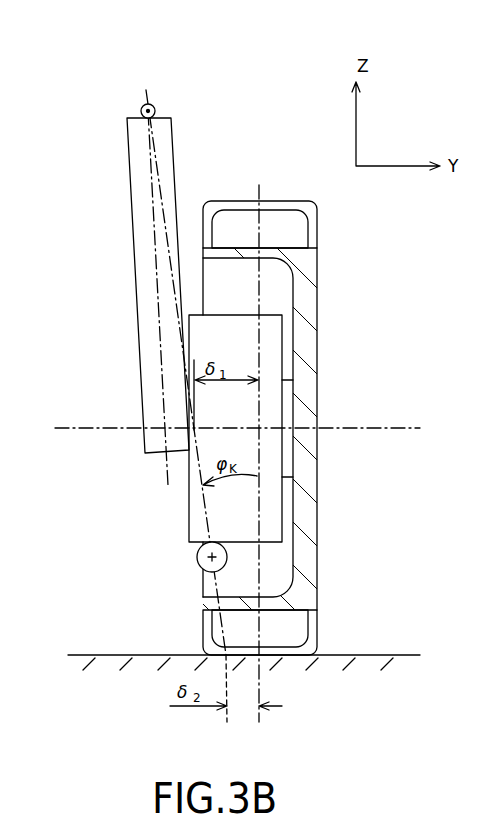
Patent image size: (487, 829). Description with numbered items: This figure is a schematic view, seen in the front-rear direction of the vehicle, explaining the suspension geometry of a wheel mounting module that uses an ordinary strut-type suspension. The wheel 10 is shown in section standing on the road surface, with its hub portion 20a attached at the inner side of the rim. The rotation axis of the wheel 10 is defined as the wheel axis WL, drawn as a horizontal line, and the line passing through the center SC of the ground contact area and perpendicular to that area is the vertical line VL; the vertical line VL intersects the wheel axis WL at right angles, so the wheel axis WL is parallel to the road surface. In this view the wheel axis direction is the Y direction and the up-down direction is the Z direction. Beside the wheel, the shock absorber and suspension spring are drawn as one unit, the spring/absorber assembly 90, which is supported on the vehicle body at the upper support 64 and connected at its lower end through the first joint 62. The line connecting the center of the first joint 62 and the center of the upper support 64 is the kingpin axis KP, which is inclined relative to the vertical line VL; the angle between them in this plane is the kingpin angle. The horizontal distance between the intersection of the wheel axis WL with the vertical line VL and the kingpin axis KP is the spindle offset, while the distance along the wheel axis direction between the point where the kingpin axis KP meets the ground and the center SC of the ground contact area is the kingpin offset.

The wheel 10 is at (313, 277).
The hub / knuckle portion 20a is at (273, 521).
The first joint 62 is at (198, 563).
The upper support 64 is at (151, 106).
The spring/absorber assembly 90 is at (139, 318).
The vertical line VL is at (258, 350).
The wheel axis WL is at (370, 410).
The kingpin axis KP is at (205, 502).
The center of ground contact area SC is at (259, 656).